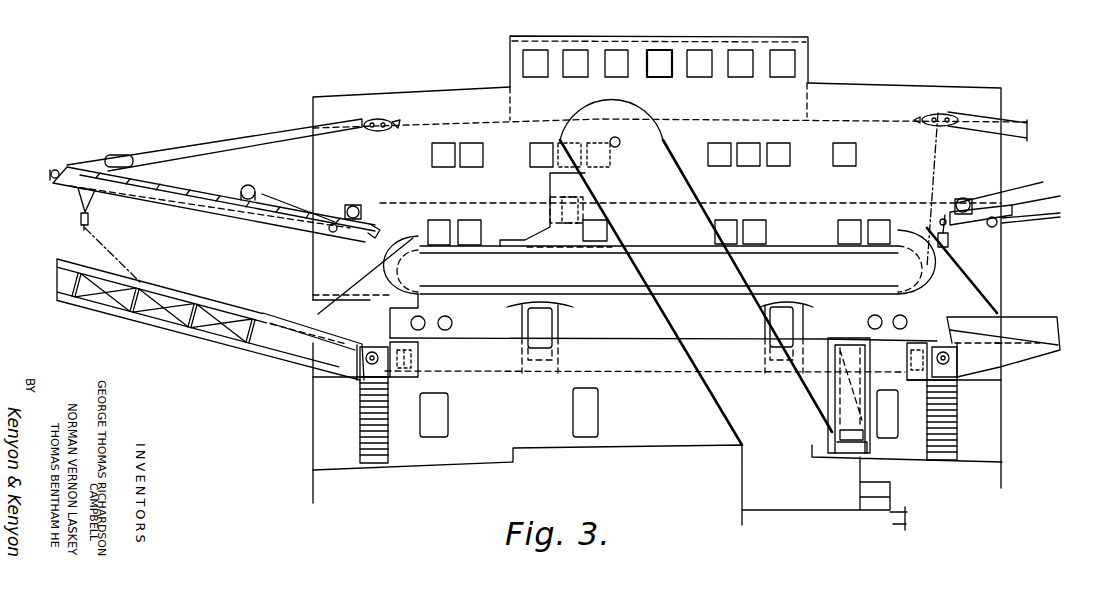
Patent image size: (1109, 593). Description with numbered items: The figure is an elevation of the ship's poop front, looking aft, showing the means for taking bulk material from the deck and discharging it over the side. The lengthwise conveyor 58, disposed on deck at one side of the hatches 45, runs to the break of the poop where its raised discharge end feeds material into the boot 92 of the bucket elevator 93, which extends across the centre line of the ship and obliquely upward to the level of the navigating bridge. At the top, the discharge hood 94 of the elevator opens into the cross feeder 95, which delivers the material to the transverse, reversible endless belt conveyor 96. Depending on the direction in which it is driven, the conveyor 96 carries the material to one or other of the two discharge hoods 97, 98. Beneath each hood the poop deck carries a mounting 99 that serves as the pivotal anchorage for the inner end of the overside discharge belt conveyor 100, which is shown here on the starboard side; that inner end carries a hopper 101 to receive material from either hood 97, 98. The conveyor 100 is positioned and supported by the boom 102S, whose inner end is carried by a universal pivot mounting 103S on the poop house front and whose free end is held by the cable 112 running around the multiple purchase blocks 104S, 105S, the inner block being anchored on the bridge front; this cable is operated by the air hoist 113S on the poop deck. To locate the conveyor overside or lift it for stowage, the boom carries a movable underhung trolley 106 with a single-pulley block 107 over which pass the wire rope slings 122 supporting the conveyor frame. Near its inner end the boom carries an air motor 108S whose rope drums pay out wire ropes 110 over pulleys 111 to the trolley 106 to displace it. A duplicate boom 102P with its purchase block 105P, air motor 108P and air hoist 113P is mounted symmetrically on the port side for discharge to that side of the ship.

The hatches 45 is at (657, 283).
The lengthwise conveyor 58 is at (848, 345).
The boot 92 is at (773, 473).
The bucket elevator 93 is at (696, 272).
The discharge hood 94 is at (558, 173).
The cross feeder 95 is at (550, 212).
The transverse reversible endless belt conveyor 96 is at (660, 262).
The discharge hood 97 is at (370, 272).
The discharge hood 98 is at (947, 277).
The mounting 99 is at (342, 383).
The overside discharge belt conveyor 100 is at (175, 328).
The hopper 101 is at (323, 325).
The boom 102S is at (212, 207).
The boom 102P is at (1037, 201).
The universal pivot mounting 103S is at (390, 230).
The multiple purchase block 104S is at (113, 155).
The multiple purchase block 105S is at (372, 118).
The multiple purchase block 105P is at (938, 113).
The trolley 106 is at (76, 201).
The block 107 is at (80, 222).
The air motor 108S is at (353, 205).
The air motor 108P is at (984, 186).
The wire ropes 110 is at (278, 190).
The pulleys 111 is at (55, 170).
The cable 112 is at (236, 135).
The air hoist 113S is at (420, 361).
The air hoist 113P is at (923, 373).
The wire rope slings 122 is at (124, 256).